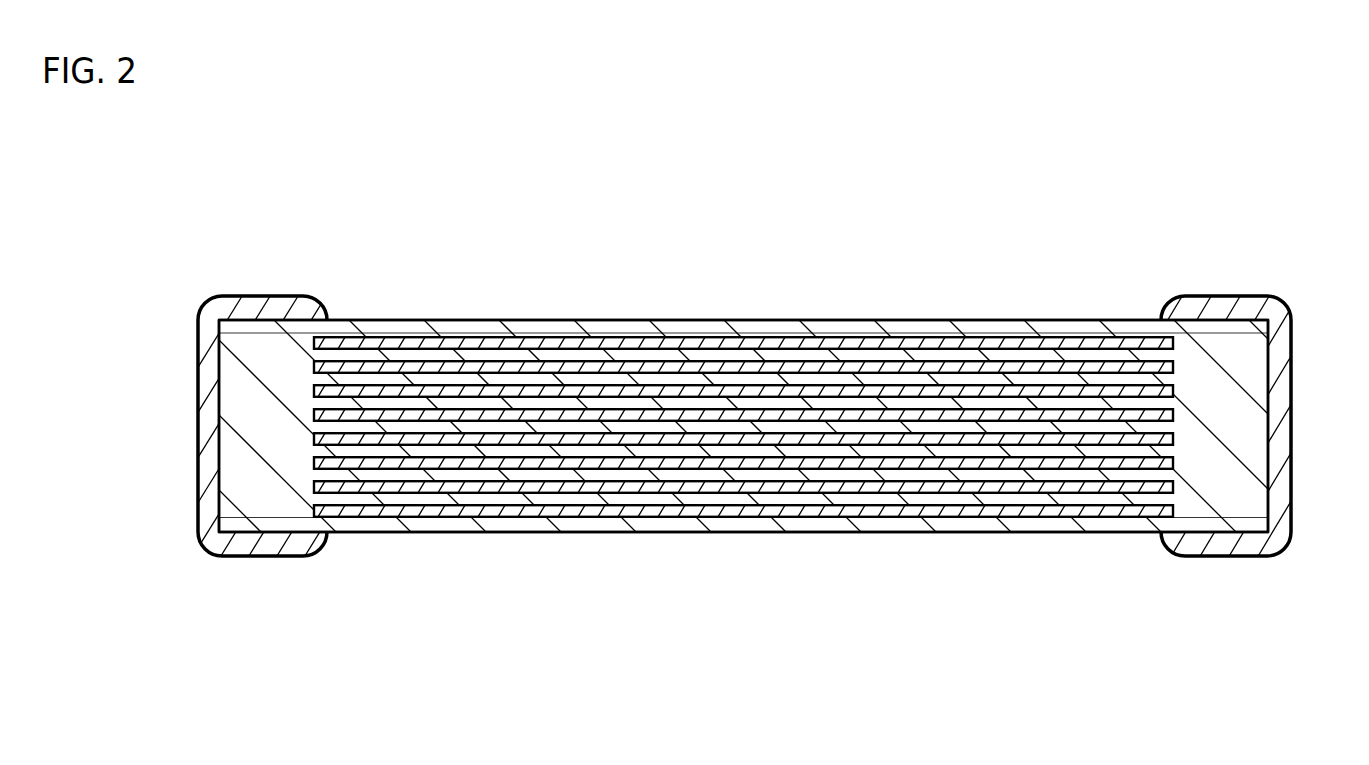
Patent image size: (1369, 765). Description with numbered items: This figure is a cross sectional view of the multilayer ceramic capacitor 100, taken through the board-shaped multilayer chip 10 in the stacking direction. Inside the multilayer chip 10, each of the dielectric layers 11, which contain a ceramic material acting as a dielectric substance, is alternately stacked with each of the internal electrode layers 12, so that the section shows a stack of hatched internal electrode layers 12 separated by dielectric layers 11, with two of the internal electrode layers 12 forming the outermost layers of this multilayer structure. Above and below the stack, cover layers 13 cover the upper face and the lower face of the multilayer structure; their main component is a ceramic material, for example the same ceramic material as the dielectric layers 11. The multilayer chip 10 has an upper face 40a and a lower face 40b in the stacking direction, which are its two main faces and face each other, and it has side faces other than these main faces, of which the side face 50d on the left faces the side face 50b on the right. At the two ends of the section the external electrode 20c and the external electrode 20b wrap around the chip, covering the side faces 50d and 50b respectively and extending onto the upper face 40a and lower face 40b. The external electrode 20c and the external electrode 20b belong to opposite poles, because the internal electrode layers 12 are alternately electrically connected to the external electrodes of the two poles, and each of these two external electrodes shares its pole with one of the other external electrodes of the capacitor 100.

The multilayer ceramic capacitor 100 is at (165, 197).
The multilayer chip 10 is at (743, 406).
The dielectric layer 11 is at (743, 435).
The internal electrode layer 12 is at (538, 392).
The cover layer 13 is at (1117, 328).
The external electrode 20b is at (1239, 296).
The external electrode 20c is at (247, 296).
The upper face 40a is at (1073, 320).
The lower face 40b is at (1060, 533).
The side face 50b is at (1268, 410).
The side face 50d is at (220, 405).